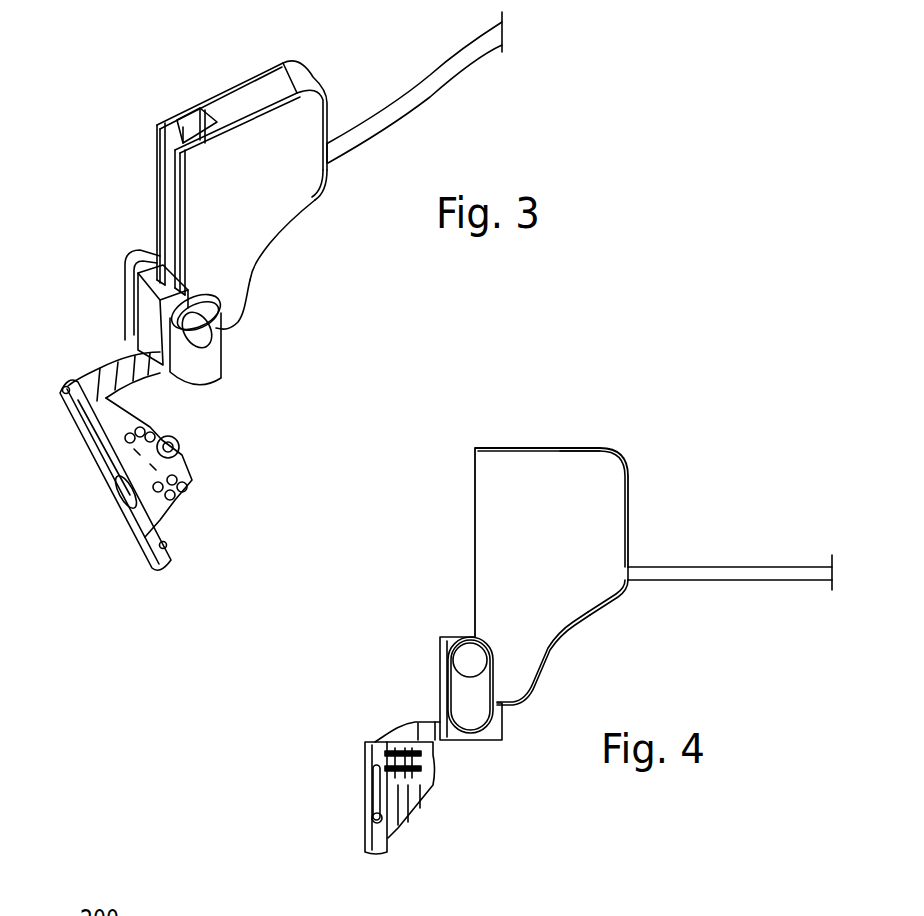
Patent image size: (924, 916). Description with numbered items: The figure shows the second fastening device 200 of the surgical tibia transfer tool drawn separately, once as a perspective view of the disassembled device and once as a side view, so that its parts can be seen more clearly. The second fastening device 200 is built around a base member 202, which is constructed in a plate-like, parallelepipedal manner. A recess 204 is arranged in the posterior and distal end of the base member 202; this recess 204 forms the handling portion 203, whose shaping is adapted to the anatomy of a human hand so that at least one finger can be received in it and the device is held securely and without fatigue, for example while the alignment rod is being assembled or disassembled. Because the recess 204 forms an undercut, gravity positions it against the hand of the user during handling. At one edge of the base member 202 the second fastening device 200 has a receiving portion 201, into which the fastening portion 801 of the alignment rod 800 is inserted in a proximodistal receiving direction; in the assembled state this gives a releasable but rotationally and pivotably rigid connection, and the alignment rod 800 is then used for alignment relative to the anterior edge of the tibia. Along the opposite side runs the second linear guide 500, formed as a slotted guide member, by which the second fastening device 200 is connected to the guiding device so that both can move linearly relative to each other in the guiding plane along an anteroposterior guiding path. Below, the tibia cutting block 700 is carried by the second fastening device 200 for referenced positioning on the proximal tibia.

In FIG. 3, the second fastening device 200 is at (133, 98).
In FIG. 4, the second fastening device 200 is at (680, 440).
In FIG. 3, the receiving portion 201 is at (302, 186).
In FIG. 4, the receiving portion 201 is at (640, 600).
In FIG. 3, the base member 202 is at (260, 223).
In FIG. 4, the base member 202 is at (568, 462).
In FIG. 3, the handling portion 203 is at (252, 290).
In FIG. 4, the handling portion 203 is at (580, 640).
In FIG. 3, the recess 204 is at (255, 332).
In FIG. 4, the recess 204 is at (603, 658).
In FIG. 3, the second linear guide 500 is at (145, 159).
In FIG. 4, the second linear guide 500 is at (470, 527).
In FIG. 3, the tibia cutting block 700 is at (103, 470).
In FIG. 4, the tibia cutting block 700 is at (418, 805).
In FIG. 3, the alignment rod 800 is at (490, 60).
In FIG. 4, the alignment rod 800 is at (790, 555).
In FIG. 3, the fastening portion 801 is at (332, 130).
In FIG. 4, the fastening portion 801 is at (636, 556).